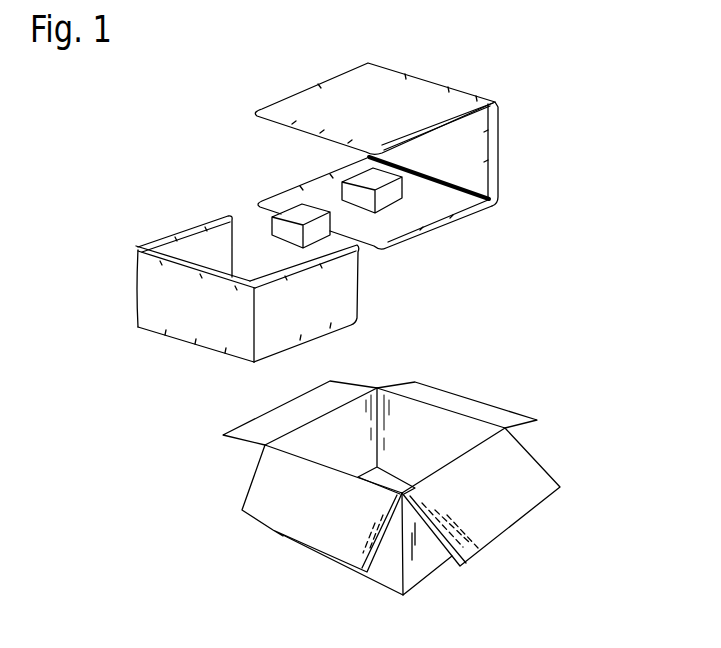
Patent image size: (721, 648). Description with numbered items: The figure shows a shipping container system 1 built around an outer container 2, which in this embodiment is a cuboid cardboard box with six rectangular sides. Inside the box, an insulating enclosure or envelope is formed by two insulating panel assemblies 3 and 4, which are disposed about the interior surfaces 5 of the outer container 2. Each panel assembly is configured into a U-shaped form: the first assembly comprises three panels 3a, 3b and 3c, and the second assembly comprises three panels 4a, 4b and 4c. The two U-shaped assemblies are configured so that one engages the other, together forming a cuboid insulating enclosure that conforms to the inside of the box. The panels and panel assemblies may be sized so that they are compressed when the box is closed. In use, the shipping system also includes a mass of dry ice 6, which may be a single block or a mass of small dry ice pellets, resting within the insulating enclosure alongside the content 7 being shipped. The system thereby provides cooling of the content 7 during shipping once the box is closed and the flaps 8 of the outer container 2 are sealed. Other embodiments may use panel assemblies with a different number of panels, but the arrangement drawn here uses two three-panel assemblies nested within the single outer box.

The shipping container system 1 is at (176, 179).
The outer container 2 is at (318, 557).
The insulating panel assembly 3 is at (308, 96).
The panel 3a is at (478, 212).
The panel 3b is at (500, 197).
The panel 3c is at (450, 127).
The insulating panel assembly 4 is at (140, 228).
The panel 4a is at (135, 302).
The panel 4b is at (193, 343).
The panel 4c is at (360, 300).
The interior surfaces 5 is at (438, 413).
The mass of dry ice 6 is at (405, 193).
The content 7 is at (333, 227).
The flaps 8 is at (307, 393).